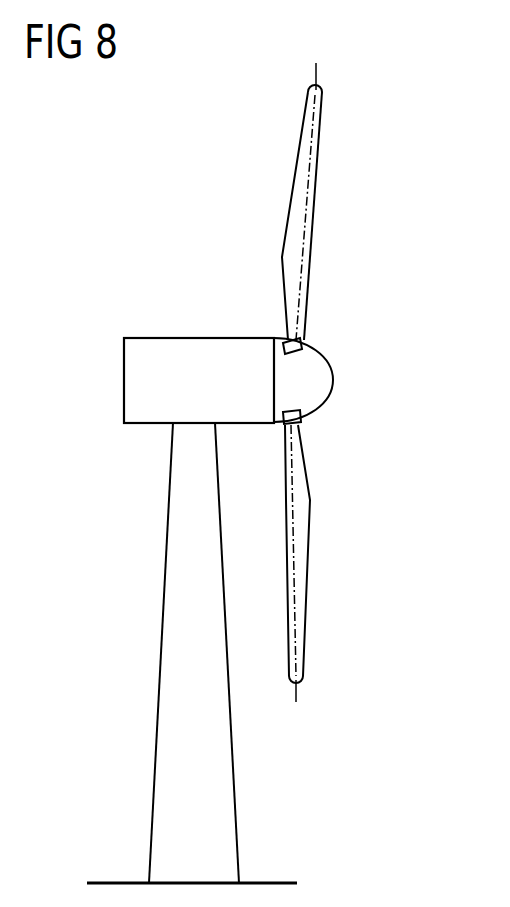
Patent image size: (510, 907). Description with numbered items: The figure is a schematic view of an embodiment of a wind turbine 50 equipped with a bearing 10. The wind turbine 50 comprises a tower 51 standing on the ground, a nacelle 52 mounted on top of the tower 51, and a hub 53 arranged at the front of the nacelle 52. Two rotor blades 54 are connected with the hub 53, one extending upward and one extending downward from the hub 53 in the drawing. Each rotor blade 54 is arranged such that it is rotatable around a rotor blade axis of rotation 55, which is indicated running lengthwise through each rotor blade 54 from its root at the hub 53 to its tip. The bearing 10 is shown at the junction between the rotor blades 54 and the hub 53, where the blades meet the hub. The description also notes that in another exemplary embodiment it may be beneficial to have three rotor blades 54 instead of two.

The wind turbine 50 is at (92, 586).
The tower 51 is at (218, 753).
The nacelle 52 is at (186, 338).
The hub 53 is at (336, 378).
The rotor blade 54 is at (292, 256).
The rotor blade axis of rotation 55 is at (318, 72).
The bearing 10 is at (290, 352).